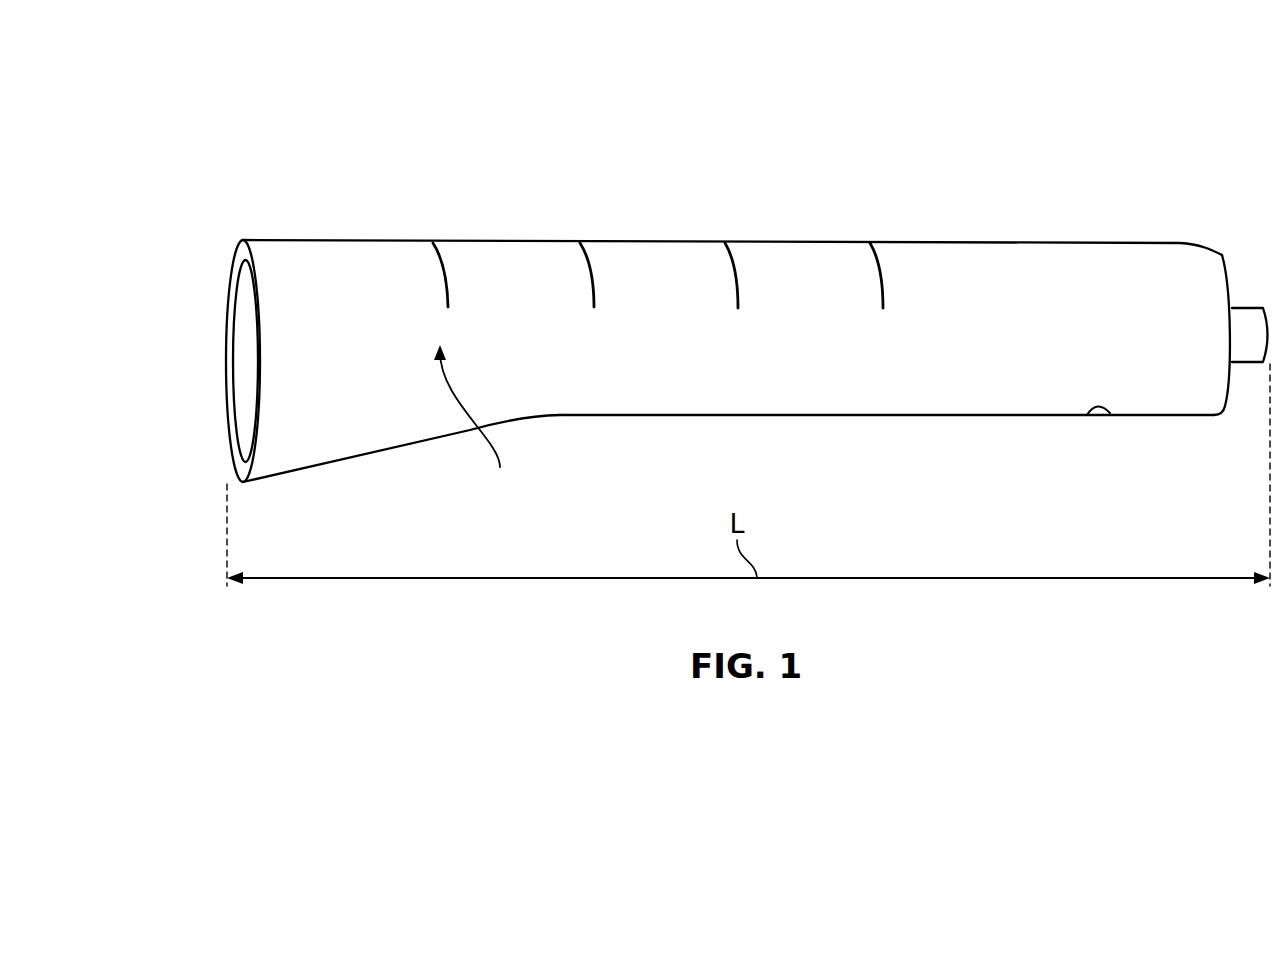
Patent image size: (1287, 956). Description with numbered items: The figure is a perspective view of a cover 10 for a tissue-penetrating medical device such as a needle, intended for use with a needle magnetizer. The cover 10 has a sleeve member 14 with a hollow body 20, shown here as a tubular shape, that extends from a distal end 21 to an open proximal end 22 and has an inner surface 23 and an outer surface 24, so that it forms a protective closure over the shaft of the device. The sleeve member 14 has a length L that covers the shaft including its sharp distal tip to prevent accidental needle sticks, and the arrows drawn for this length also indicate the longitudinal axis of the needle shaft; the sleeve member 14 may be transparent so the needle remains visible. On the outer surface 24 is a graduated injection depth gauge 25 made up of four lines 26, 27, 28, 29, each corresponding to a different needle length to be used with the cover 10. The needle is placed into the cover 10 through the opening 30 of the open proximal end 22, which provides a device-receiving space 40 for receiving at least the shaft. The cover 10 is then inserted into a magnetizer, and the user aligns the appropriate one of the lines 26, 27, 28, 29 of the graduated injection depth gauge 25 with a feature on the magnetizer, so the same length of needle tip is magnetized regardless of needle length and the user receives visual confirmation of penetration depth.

The cover 10 is at (220, 96).
The sleeve member 14 is at (950, 417).
The hollow body 20 is at (546, 270).
The distal end 21 is at (1223, 253).
The open proximal end 22 is at (244, 240).
The inner surface 23 is at (1110, 413).
The outer surface 24 is at (1047, 243).
The graduated injection depth gauge 25 is at (475, 424).
The line 26 is at (436, 232).
The line 27 is at (583, 232).
The line 28 is at (728, 231).
The line 29 is at (873, 231).
The opening 30 is at (243, 337).
The device-receiving space 40 is at (287, 395).